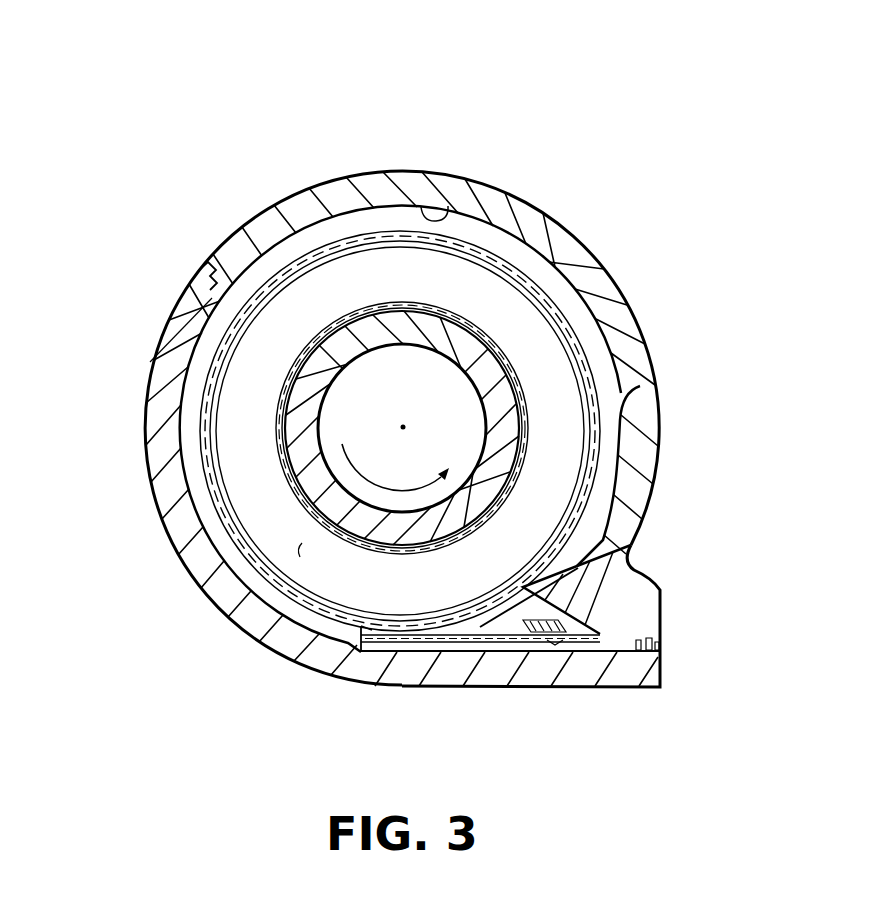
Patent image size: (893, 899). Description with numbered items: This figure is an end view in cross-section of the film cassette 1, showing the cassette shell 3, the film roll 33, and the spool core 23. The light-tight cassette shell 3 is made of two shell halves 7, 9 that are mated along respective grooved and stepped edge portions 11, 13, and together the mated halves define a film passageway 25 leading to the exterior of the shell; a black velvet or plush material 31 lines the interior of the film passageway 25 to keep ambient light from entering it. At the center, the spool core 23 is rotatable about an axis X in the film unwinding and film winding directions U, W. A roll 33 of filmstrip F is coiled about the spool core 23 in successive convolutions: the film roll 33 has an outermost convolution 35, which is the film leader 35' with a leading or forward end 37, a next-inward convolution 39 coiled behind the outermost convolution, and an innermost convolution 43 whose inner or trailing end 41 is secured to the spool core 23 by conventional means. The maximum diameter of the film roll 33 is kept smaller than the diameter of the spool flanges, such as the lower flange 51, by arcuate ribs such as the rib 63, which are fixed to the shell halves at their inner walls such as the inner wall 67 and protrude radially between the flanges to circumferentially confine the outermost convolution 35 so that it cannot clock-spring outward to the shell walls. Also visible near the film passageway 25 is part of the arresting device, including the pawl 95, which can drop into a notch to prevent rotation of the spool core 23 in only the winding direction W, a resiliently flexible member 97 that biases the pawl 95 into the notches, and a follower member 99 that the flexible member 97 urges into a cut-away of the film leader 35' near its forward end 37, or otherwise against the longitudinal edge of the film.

The film cassette 1 is at (343, 158).
The cassette shell 3 is at (306, 182).
The shell half 7 is at (207, 596).
The shell half 9 is at (566, 224).
The grooved edge portion 11 is at (196, 270).
The stepped edge portion 13 is at (207, 297).
The spool core 23 is at (497, 392).
The film passageway 25 is at (580, 668).
The plush material 31 is at (662, 645).
The film roll 33 is at (582, 322).
The outermost convolution 35 is at (327, 431).
The film leader 35' is at (315, 431).
The forward end 37 is at (627, 653).
The next-inward convolution 39 is at (218, 514).
The trailing end 41 is at (299, 364).
The innermost convolution 43 is at (280, 455).
The lower flange 51 is at (411, 644).
The arcuate rib 63 is at (622, 412).
The inner wall 67 is at (424, 206).
The pawl 95 is at (498, 608).
The resiliently flexible member 97 is at (500, 648).
The follower member 99 is at (540, 658).
The filmstrip F is at (300, 557).
The winding direction W is at (345, 443).
The unwinding direction U is at (447, 466).
The axis X is at (403, 427).